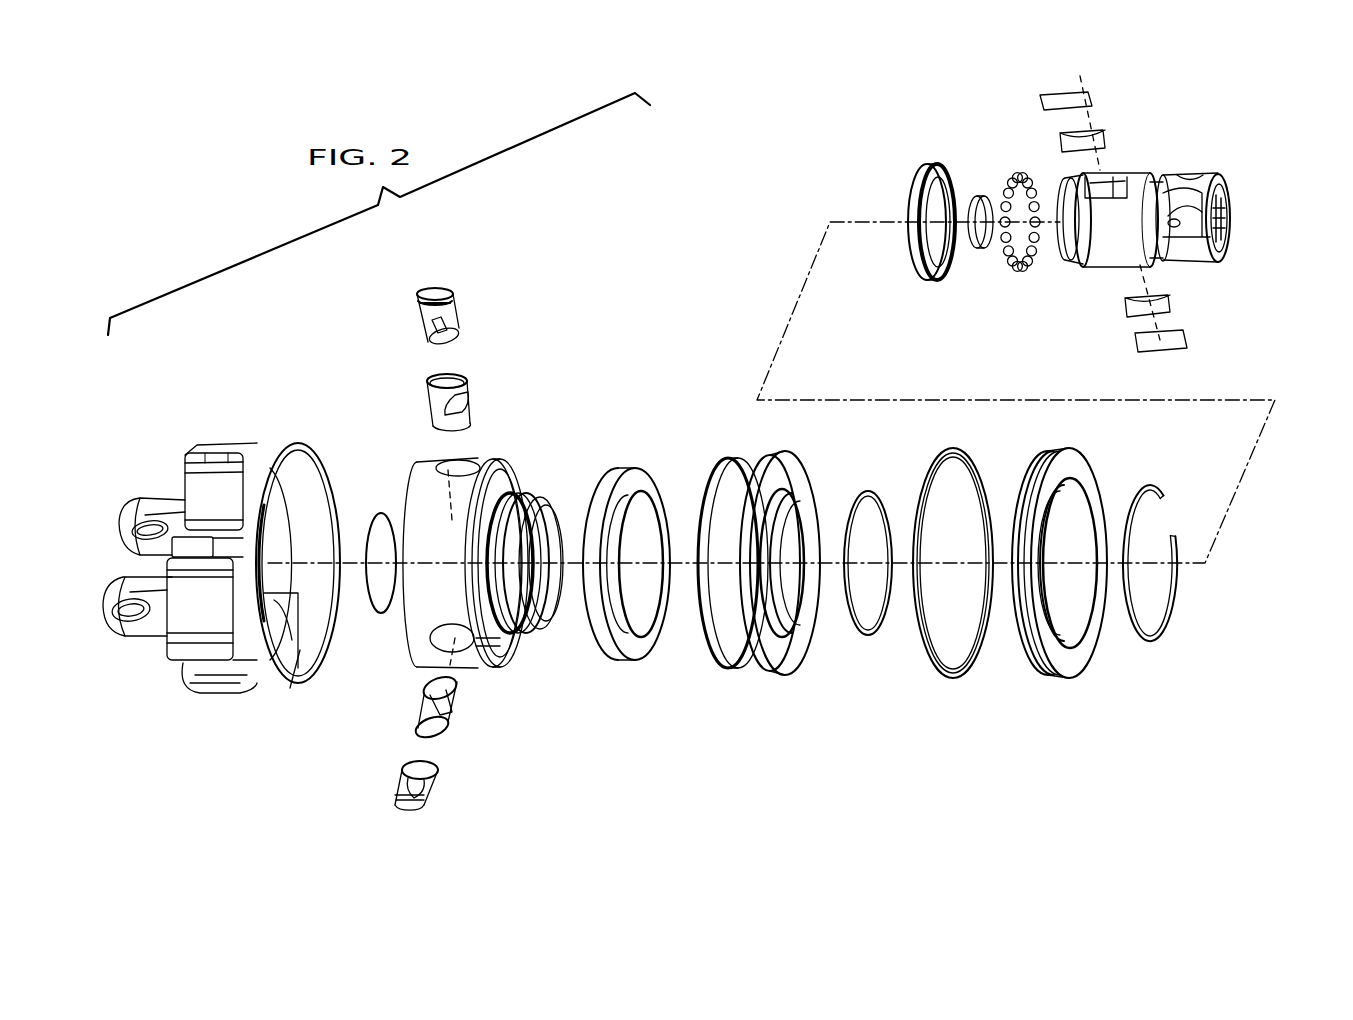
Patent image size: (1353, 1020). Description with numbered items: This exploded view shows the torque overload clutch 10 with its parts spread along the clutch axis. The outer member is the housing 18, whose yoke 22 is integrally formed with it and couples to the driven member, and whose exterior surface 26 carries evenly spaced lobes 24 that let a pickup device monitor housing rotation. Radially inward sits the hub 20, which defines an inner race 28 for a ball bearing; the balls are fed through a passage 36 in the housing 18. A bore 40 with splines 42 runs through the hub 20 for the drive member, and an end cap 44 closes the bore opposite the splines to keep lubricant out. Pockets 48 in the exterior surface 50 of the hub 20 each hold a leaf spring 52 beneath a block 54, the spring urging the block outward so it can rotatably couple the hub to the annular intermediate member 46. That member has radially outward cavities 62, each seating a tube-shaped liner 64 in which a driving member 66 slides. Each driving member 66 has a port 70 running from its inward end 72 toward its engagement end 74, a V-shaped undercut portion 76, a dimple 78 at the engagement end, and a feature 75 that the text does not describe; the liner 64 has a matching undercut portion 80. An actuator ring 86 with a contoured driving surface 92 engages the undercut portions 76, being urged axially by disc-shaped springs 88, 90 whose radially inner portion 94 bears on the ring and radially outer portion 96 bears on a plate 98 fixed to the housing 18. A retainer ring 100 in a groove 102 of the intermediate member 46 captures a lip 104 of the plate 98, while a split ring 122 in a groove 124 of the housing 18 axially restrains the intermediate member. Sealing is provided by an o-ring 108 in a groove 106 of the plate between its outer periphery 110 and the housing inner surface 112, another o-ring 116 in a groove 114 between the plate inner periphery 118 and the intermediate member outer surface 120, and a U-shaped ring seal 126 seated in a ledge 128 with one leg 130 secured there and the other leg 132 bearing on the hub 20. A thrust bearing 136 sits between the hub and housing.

The clutch 10 is at (199, 760).
The housing 18 is at (263, 441).
The hub 20 is at (1190, 207).
The yoke 22 is at (128, 500).
The lobes 24 is at (195, 440).
The exterior surface 26 is at (220, 503).
The inner race 28 is at (1075, 268).
The passage 36 is at (1012, 180).
The bore 40 is at (1228, 200).
The splines 42 is at (1228, 230).
The end cap 44 is at (978, 250).
The intermediate member 46 is at (478, 567).
The pockets 48 is at (1112, 175).
The exterior surface 50 is at (1116, 252).
The leaf spring 52 is at (1100, 128).
The block 54 is at (1090, 90).
The cavity 62 is at (462, 465).
The liner 64 is at (422, 412).
The driving member 66 is at (413, 330).
The port 70 is at (460, 325).
The inward end 72 is at (455, 345).
The engagement end 74 is at (448, 292).
The band 75 is at (418, 300).
The undercut portion 76 is at (455, 318).
The dimple 78 is at (436, 292).
The undercut portion 80 is at (466, 402).
The actuator ring 86 is at (627, 529).
The spring 88 is at (752, 672).
The spring 90 is at (803, 576).
The driving surface 92 is at (598, 462).
The radially inner portion 94 is at (800, 500).
The radially outer portion 96 is at (775, 460).
The plate 98 is at (1088, 557).
The retainer ring 100 is at (1165, 636).
The groove 102 is at (530, 495).
The lip 104 is at (1075, 480).
The groove 106 is at (1060, 452).
The o-ring 108 is at (960, 448).
The outer periphery 110 is at (1037, 452).
The inner surface 112 is at (318, 520).
The groove 114 is at (510, 480).
The o-ring 116 is at (870, 490).
The inner periphery 118 is at (1070, 625).
The outer surface 120 is at (510, 640).
The split ring 122 is at (712, 445).
The groove 124 is at (298, 690).
The ring seal 126 is at (888, 183).
The ledge 128 is at (548, 515).
The leg 130 is at (930, 240).
The leg 132 is at (920, 195).
The thrust bearing 136 is at (384, 512).